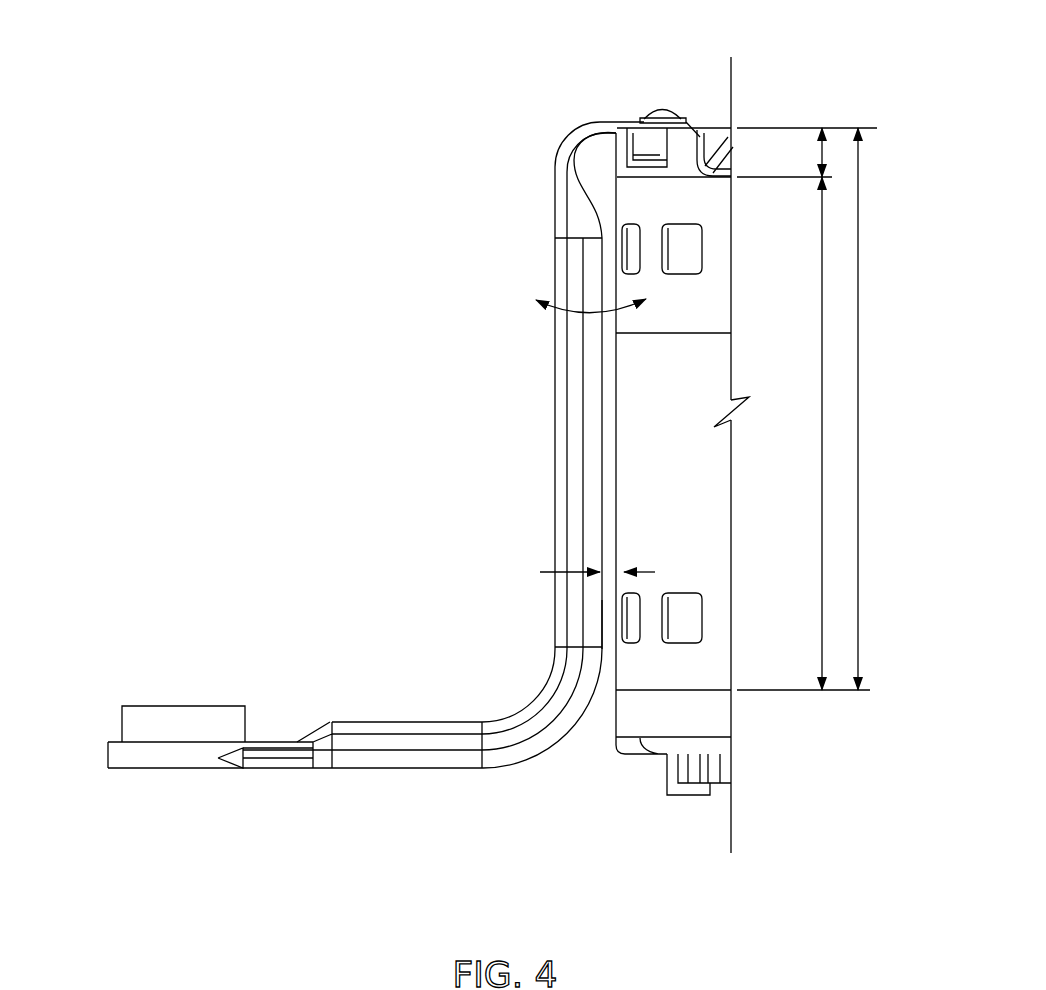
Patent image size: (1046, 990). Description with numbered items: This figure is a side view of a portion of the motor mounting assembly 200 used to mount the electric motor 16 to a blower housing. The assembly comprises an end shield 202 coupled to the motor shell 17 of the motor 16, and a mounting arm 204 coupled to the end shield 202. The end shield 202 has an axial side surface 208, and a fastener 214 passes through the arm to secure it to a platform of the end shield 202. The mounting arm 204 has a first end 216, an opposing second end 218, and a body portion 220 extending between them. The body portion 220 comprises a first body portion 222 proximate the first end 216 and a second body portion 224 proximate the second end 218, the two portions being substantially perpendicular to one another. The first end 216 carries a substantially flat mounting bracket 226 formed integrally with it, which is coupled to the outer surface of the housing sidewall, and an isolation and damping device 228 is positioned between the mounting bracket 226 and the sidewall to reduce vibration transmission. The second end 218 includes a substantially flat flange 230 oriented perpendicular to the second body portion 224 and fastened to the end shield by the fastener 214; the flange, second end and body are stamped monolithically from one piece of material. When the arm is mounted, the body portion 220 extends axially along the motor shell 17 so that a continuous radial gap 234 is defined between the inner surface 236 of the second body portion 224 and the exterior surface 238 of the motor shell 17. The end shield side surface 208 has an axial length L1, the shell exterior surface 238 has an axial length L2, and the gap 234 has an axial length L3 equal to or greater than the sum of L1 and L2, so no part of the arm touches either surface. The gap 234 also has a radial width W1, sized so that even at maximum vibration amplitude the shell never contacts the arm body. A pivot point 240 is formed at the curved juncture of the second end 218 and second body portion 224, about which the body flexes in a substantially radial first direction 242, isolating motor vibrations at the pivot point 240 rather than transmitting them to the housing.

The motor mounting assembly 200 is at (488, 65).
The electric motor 16 is at (722, 498).
The motor shell 17 is at (708, 352).
The end shield 202 is at (735, 152).
The mounting arm 204 is at (540, 755).
The axial side surface 208 is at (617, 153).
The fastener 214 is at (665, 108).
The first end 216 is at (219, 794).
The second end 218 is at (616, 106).
The body portion 220 is at (555, 625).
The first body portion 222 is at (403, 758).
The second body portion 224 is at (555, 373).
The mounting bracket 226 is at (165, 755).
The isolation and damping device 228 is at (193, 706).
The flange 230 is at (688, 122).
The radial gap 234 is at (607, 674).
The inner surface 236 is at (600, 470).
The exterior surface 238 is at (613, 523).
The pivot point 240 is at (573, 134).
The first direction 242 is at (565, 295).
The axial length of end shield side surface L1 is at (826, 150).
The axial length of motor shell exterior surface L2 is at (820, 432).
The axial length of gap L3 is at (873, 409).
The radial width of gap W1 is at (570, 589).